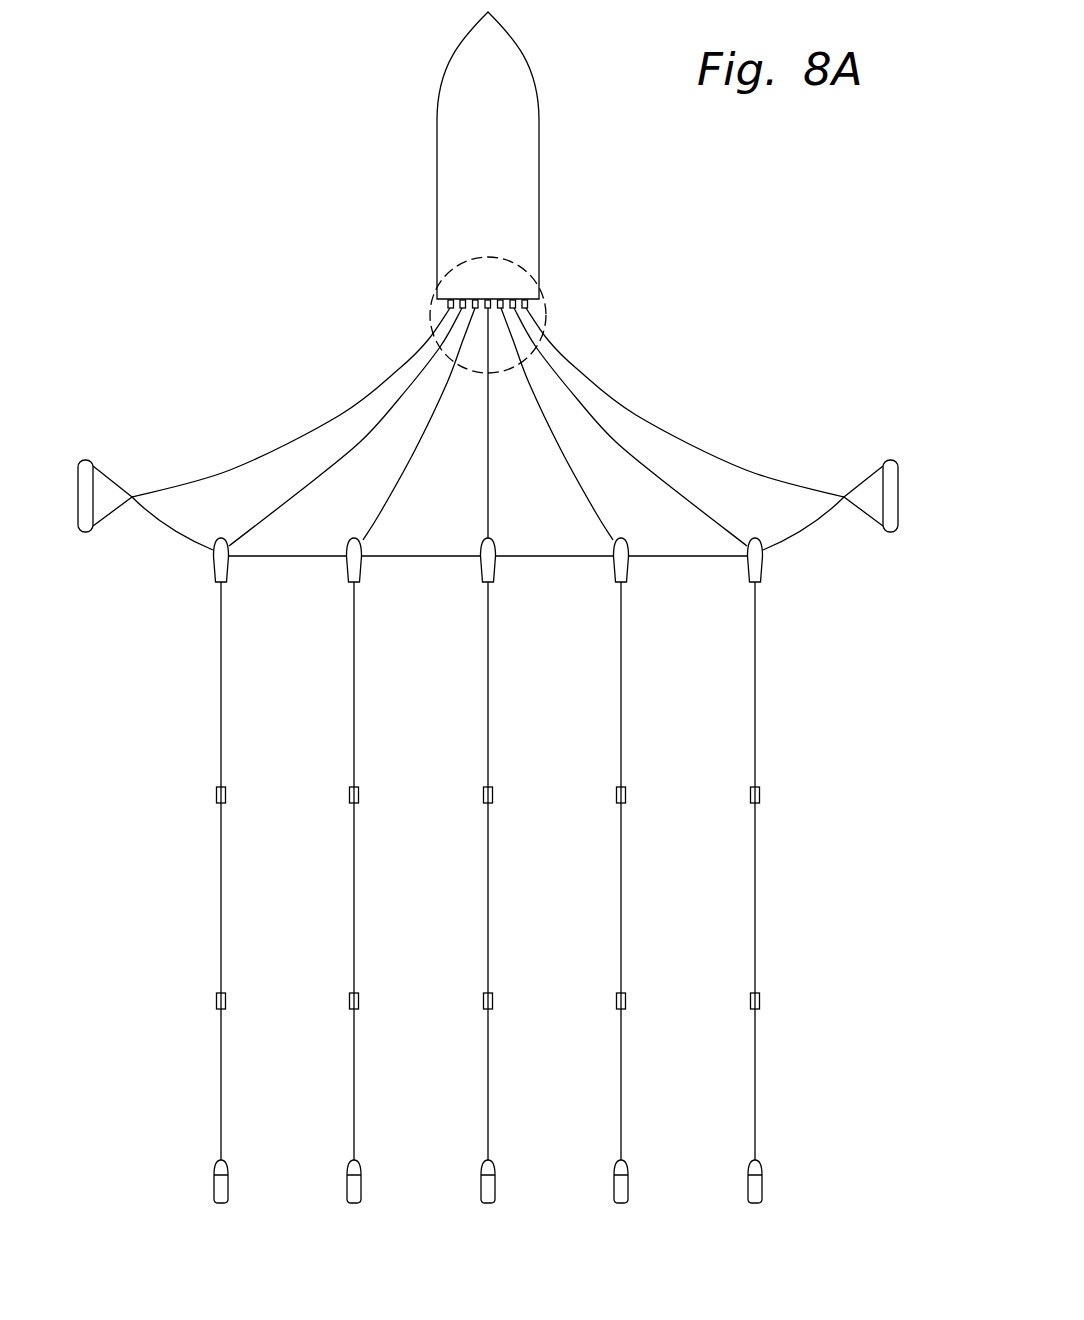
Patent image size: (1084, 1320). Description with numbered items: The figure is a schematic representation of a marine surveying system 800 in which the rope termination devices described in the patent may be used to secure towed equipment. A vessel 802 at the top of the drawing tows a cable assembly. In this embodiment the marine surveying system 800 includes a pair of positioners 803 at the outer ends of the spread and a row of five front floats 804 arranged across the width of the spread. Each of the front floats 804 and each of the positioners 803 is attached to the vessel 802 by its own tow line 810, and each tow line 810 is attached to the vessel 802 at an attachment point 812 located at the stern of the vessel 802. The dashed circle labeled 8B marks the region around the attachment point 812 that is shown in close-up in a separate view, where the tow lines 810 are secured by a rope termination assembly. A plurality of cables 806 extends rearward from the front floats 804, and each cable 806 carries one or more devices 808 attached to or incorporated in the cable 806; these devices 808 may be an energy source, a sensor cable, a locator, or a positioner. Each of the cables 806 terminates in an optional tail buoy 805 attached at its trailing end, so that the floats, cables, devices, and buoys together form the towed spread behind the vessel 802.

The marine surveying system 800 is at (298, 83).
The vessel 802 is at (539, 168).
The positioner 803 is at (890, 460).
The front float 804 is at (762, 570).
The tail buoy 805 is at (763, 1190).
The cable 806 is at (756, 898).
The device 808 is at (760, 793).
The tow line 810 is at (687, 506).
The attachment point 812 is at (462, 300).
The close-up view of the tow lines attached at the attachment point 8B is at (431, 316).